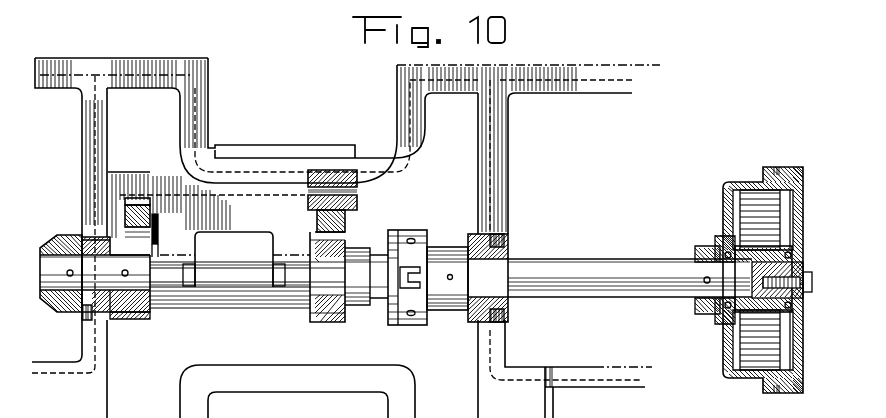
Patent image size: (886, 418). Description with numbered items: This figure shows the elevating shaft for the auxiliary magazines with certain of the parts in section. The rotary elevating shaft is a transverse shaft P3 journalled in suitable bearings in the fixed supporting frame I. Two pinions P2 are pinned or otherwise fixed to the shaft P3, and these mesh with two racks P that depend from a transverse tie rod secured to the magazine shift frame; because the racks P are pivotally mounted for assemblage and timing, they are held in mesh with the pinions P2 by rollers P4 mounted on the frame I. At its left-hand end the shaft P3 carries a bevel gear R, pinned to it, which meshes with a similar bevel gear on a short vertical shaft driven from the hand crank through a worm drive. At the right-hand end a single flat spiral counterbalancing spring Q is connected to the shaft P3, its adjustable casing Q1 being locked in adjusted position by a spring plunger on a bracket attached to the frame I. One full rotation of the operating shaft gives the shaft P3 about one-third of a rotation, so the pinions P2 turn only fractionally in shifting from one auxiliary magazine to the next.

The fixed supporting frame I is at (207, 133).
The bevel gear R is at (54, 237).
The rack P is at (163, 217).
The pinion P2 is at (330, 313).
The transverse shaft P3 is at (553, 262).
The roller P4 is at (134, 199).
The counterbalancing spring Q is at (745, 196).
The adjustable casing Q1 is at (736, 181).